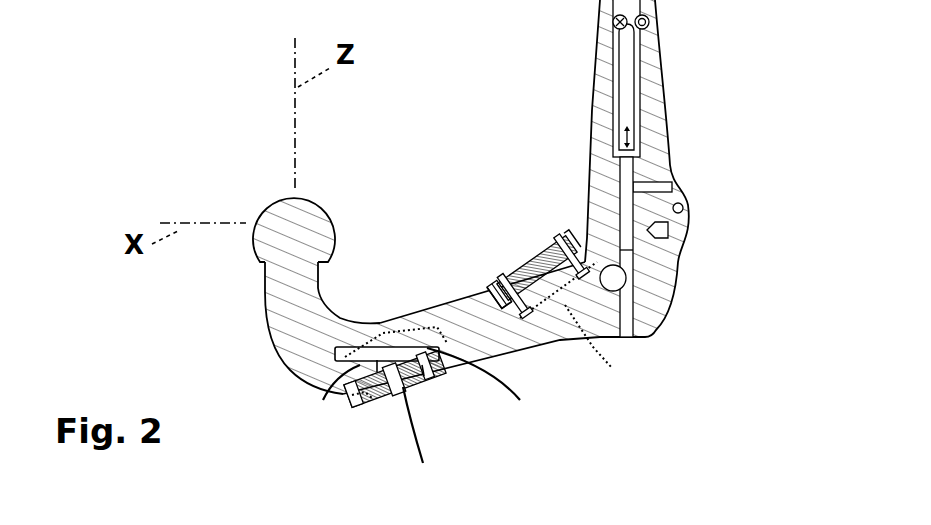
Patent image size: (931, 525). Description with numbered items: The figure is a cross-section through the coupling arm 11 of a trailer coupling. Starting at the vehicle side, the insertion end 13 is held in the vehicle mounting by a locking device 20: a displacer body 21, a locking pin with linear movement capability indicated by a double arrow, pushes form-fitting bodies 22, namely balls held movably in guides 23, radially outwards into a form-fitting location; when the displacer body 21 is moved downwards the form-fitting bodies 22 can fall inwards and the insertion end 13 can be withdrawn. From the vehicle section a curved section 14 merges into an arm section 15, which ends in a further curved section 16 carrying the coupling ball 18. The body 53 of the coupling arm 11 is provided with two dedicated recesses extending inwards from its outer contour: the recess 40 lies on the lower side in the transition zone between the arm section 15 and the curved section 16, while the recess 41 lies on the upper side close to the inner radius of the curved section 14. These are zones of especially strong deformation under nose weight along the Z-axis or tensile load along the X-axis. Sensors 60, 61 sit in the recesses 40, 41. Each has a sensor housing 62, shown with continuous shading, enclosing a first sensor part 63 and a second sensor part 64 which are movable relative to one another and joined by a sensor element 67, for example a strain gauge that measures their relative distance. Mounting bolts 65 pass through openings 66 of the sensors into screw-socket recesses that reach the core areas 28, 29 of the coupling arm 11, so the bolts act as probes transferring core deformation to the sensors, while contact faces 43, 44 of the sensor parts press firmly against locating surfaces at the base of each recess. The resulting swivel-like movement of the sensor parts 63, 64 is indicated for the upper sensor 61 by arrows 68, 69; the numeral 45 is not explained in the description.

The coupling arm 11 is at (660, 340).
The insertion end 13 is at (658, 82).
The curved section 14 is at (663, 307).
The arm section 15 is at (546, 338).
The further curved section 16 is at (292, 355).
The coupling ball 18 is at (283, 215).
The locking device 20 is at (608, 115).
The displacer body 21 is at (628, 83).
The form-fitting bodies 22 is at (616, 18).
The guides 23 is at (652, 22).
The core area 28 is at (349, 377).
The core area 29 is at (577, 327).
The recess 40 is at (443, 363).
The recess 41 is at (498, 295).
The contact face 43 is at (510, 277).
The contact face 44 is at (377, 360).
The sensor connection 45 is at (422, 365).
The body 53 is at (287, 315).
The sensor 60 is at (398, 415).
The sensor 61 is at (514, 226).
The sensor housing 62 is at (533, 250).
The first sensor part 63 is at (390, 400).
The second sensor part 64 is at (430, 392).
The mounting bolts 65 is at (359, 427).
The openings 66 is at (427, 387).
The sensor element 67 is at (427, 410).
The arrow 68 is at (500, 280).
The arrow 69 is at (562, 243).